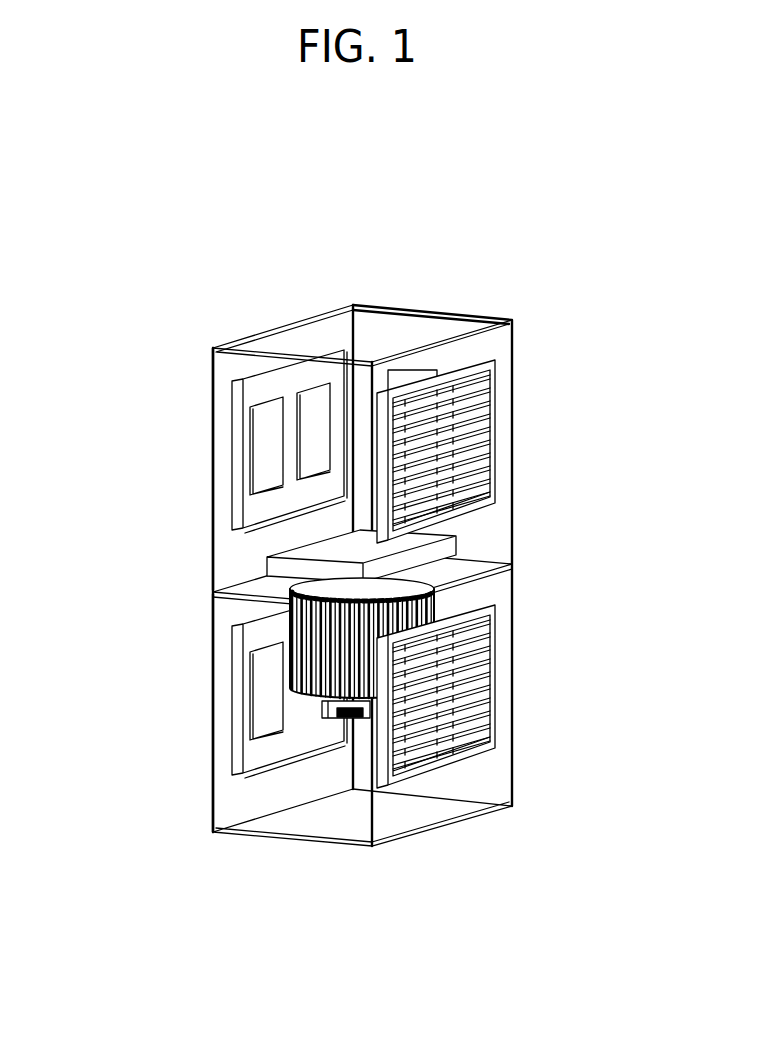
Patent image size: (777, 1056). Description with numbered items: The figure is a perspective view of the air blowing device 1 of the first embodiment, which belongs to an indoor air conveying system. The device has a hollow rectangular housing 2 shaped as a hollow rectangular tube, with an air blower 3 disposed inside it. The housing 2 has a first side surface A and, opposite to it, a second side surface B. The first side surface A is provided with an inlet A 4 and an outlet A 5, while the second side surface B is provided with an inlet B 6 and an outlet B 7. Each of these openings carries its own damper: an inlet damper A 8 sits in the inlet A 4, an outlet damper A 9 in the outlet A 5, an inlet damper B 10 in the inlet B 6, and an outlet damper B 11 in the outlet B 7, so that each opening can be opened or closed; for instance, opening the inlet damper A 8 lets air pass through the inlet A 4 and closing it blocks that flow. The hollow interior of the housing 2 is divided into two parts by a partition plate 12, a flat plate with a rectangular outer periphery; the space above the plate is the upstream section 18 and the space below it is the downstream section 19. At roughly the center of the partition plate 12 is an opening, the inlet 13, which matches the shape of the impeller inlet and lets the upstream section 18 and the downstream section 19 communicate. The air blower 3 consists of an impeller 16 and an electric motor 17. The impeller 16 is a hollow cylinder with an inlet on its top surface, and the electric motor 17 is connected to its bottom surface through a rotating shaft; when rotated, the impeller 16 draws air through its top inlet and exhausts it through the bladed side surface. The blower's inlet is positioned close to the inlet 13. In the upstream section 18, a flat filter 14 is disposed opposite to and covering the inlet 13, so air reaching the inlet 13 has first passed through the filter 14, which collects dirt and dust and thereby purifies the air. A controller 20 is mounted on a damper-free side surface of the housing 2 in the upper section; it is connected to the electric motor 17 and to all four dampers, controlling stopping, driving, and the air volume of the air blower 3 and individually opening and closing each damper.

The air blowing device 1 is at (83, 345).
The housing 2 is at (412, 832).
The air blower 3 is at (328, 714).
The inlet A 4 is at (488, 385).
The outlet A 5 is at (463, 637).
The inlet B 6 is at (230, 420).
The outlet B 7 is at (230, 662).
The inlet damper A 8 is at (436, 410).
The outlet damper A 9 is at (453, 720).
The inlet damper B 10 is at (267, 435).
The outlet damper B 11 is at (265, 702).
The partition plate 12 is at (457, 568).
The inlet 13 is at (303, 592).
The filter 14 is at (430, 553).
The impeller 16 is at (297, 695).
The electric motor 17 is at (347, 718).
The upstream section 18 is at (227, 542).
The downstream section 19 is at (222, 623).
The controller 20 is at (415, 368).
The first side surface A is at (477, 347).
The second side surface B is at (338, 323).